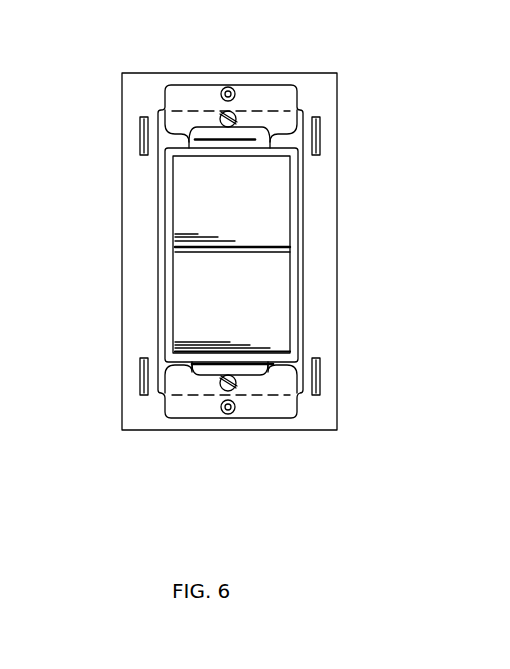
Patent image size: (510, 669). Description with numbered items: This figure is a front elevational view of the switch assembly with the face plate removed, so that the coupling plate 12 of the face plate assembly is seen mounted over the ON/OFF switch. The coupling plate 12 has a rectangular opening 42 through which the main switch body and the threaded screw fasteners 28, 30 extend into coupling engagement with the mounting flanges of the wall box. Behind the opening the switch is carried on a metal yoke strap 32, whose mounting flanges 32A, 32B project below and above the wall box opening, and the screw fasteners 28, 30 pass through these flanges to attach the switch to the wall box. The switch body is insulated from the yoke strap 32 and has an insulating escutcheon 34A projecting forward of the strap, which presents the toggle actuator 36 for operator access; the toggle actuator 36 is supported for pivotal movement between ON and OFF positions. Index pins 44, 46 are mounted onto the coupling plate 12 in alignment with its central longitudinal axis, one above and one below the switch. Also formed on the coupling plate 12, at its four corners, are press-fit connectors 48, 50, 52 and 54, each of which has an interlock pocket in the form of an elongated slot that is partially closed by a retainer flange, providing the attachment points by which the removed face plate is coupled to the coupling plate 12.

The coupling plate 12 is at (121, 94).
The threaded screw fastener 28 is at (218, 388).
The threaded screw fastener 30 is at (216, 118).
The yoke strap 32 is at (302, 97).
The mounting flange 32A is at (287, 407).
The mounting flange 32B is at (270, 96).
The insulating escutcheon 34A is at (300, 238).
The toggle actuator 36 is at (202, 172).
The rectangular opening 42 is at (160, 262).
The index pin 44 is at (235, 413).
The index pin 46 is at (228, 86).
The press-fit connector 48 is at (320, 375).
The press-fit connector 50 is at (140, 375).
The press-fit connector 52 is at (140, 133).
The press-fit connector 54 is at (320, 135).